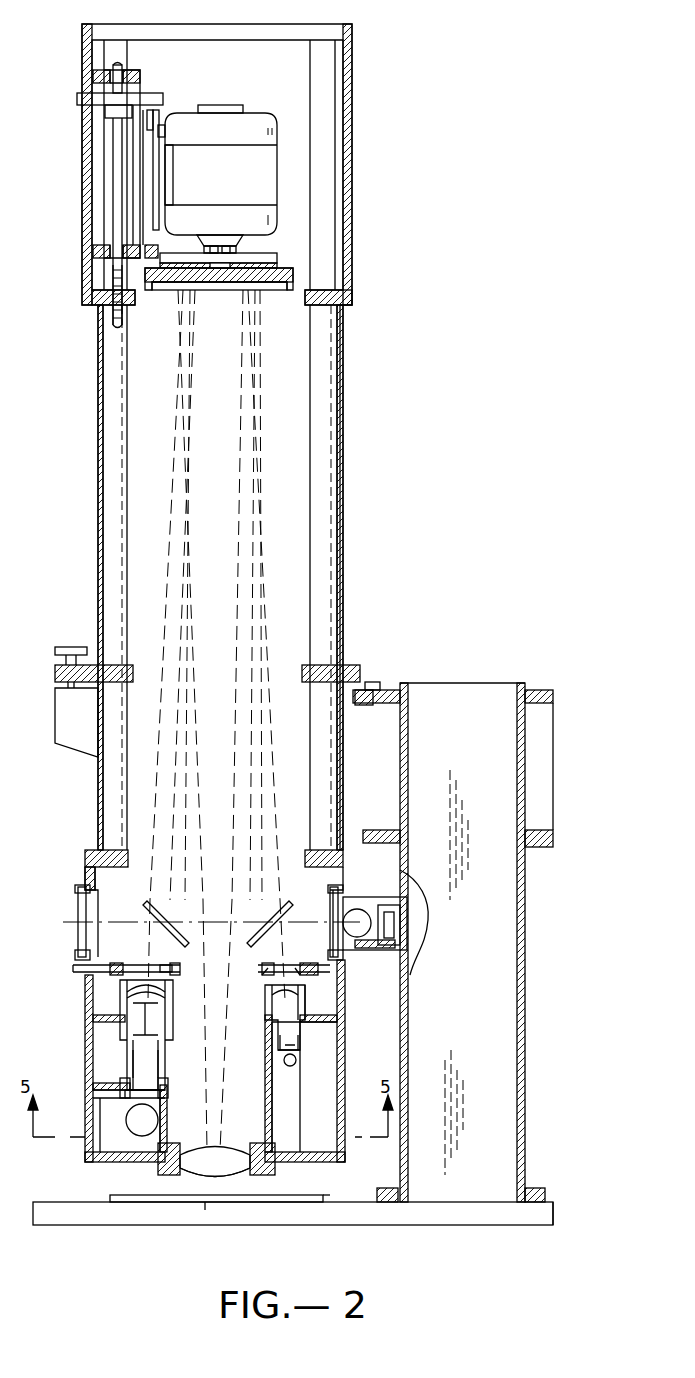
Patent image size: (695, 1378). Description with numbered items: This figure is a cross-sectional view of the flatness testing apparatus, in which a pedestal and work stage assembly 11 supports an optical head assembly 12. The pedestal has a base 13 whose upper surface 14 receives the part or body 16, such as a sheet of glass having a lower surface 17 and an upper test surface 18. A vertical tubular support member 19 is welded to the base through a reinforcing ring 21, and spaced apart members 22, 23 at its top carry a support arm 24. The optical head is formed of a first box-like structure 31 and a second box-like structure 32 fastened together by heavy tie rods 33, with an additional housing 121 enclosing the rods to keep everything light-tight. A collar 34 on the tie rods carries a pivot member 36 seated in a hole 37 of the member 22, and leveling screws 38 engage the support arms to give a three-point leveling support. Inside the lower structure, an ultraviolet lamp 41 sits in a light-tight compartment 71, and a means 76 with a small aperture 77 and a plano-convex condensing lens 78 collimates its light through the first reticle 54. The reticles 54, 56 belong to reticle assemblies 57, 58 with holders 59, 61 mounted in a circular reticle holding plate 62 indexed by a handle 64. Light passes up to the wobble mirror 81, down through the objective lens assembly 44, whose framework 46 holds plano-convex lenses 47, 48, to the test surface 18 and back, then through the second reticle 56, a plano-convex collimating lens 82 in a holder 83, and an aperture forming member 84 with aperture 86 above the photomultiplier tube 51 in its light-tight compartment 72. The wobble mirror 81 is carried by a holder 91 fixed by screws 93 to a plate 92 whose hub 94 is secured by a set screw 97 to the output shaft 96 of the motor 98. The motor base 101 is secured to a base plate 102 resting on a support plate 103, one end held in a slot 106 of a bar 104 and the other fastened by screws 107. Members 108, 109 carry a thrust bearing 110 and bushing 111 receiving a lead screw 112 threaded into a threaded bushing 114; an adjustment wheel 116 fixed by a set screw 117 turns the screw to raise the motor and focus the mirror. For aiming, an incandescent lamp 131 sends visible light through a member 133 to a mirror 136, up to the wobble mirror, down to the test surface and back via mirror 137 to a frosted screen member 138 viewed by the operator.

The pedestal and work stage assembly 11 is at (537, 1000).
The optical head assembly 12 is at (382, 452).
The base 13 is at (553, 1215).
The upper surface 14 is at (70, 1205).
The part or body 16 is at (322, 1198).
The lower surface 17 is at (205, 1205).
The upper surface 18 is at (300, 1198).
The tubular support member 19 is at (520, 1090).
The reinforcing ring 21 is at (532, 1190).
The spaced apart member 22 is at (545, 690).
The spaced apart member 23 is at (553, 838).
The support arm 24 is at (545, 763).
The first box-like structure 31 is at (368, 190).
The second box-like structure 32 is at (362, 887).
The tie rods 33 is at (115, 540).
The collar 34 is at (390, 663).
The pivot member 36 is at (373, 690).
The hole 37 is at (368, 705).
The leveling screws 38 is at (62, 648).
The lamp 41 is at (295, 1065).
The objective lens assembly 44 is at (158, 1172).
The framework 46 is at (275, 1168).
The plano-convex lens 47 is at (225, 1155).
The plano-convex lens 48 is at (225, 1180).
The photomultiplier tube 51 is at (130, 1122).
The first reticle 54 is at (285, 970).
The second reticle 56 is at (138, 970).
The reticle assembly 57 is at (268, 965).
The reticle assembly 58 is at (160, 963).
The holder 59 is at (270, 982).
The holder 61 is at (178, 975).
The circular reticle holding plate 62 is at (305, 985).
The handle 64 is at (80, 985).
The light-tight compartment 71 is at (360, 1130).
The light-tight compartment 72 is at (93, 1100).
The aperture and condensing lens means 76 is at (143, 1080).
The aperture 77 is at (280, 1050).
The plano-convex condensing lens 78 is at (268, 1010).
The wobble mirror 81 is at (268, 290).
The plano-convex collimating lens 82 is at (172, 995).
The holder 83 is at (167, 1046).
The aperture forming member 84 is at (167, 1077).
The aperture 86 is at (130, 1098).
The holder 91 is at (285, 275).
The plate 92 is at (255, 258).
The screws 93 is at (270, 265).
The hub 94 is at (265, 235).
The output shaft 96 is at (212, 245).
The set screw 97 is at (222, 245).
The motor 98 is at (262, 120).
The motor base 101 is at (167, 168).
The base plate 102 is at (165, 128).
The support plate 103 is at (140, 187).
The bar 104 is at (152, 258).
The slot 106 is at (200, 244).
The screws 107 is at (160, 113).
The member 108 is at (95, 75).
The member 109 is at (95, 252).
The thrust bearing 110 is at (95, 82).
The bushing 111 is at (95, 248).
The lead screw 112 is at (113, 70).
The threaded bushing 114 is at (105, 300).
The adjustment wheel 116 is at (80, 100).
The set screw 117 is at (118, 112).
The additional housing 121 is at (340, 362).
The incandescent lamp 131 is at (362, 905).
The member 133 is at (330, 905).
The mirror 136 is at (145, 905).
The mirror 137 is at (277, 905).
The member 138 is at (80, 905).